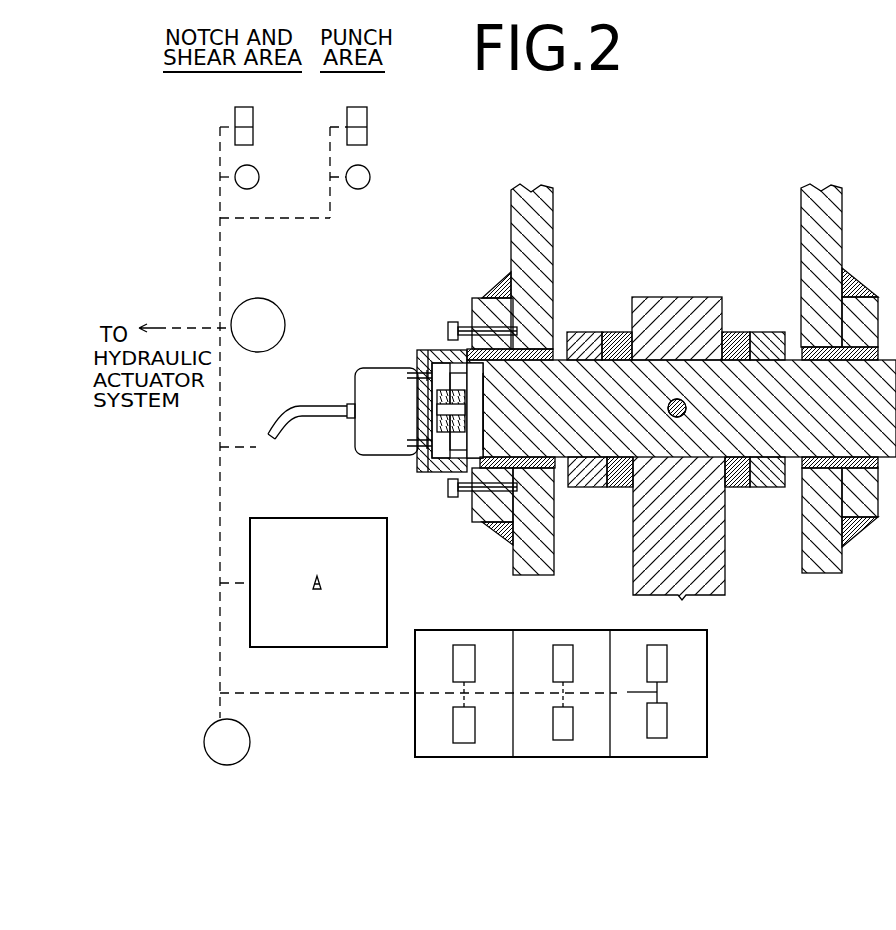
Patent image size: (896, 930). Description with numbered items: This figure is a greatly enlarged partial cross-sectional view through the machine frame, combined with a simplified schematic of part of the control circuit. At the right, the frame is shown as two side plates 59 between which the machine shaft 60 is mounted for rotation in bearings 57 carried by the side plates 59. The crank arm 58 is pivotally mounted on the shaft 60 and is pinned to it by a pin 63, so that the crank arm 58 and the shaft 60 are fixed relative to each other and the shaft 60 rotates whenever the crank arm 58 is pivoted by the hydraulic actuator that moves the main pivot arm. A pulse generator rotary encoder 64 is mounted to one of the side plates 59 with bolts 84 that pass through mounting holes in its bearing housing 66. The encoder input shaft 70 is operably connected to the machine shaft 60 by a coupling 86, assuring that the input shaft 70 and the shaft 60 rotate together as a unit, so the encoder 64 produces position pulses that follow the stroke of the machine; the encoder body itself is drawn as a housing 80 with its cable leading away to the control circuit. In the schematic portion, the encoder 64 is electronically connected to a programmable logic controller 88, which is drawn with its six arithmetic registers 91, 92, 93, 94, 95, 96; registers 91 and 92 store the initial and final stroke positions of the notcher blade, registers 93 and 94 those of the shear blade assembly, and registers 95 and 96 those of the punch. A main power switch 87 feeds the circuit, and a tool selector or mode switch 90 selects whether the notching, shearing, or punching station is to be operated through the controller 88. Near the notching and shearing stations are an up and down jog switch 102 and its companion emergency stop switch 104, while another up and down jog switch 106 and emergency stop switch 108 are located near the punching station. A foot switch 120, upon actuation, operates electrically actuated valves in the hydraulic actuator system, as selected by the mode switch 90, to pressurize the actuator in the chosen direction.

The bearings 57 is at (556, 349).
The crank arm 58 is at (683, 297).
The side plates 59 is at (553, 245).
The shaft 60 is at (796, 440).
The pin 63 is at (686, 405).
The pulse generator rotary encoder 64 is at (380, 338).
The bearing housing 66 is at (428, 350).
The encoder input shaft 70 is at (440, 408).
The sensor housing 80 is at (365, 368).
The bolts 84 is at (455, 322).
The coupling 86 is at (421, 475).
The main power switch 87 is at (276, 303).
The programmable logic controller 88 is at (601, 707).
The mode switch 90 is at (310, 518).
The arithmetic register 91 is at (453, 680).
The arithmetic register 92 is at (453, 725).
The arithmetic register 93 is at (553, 680).
The arithmetic register 94 is at (553, 722).
The arithmetic register 95 is at (647, 681).
The arithmetic register 96 is at (647, 725).
The up and down jog switch 102 is at (235, 106).
The emergency stop switch 104 is at (259, 177).
The up and down jog switch 106 is at (357, 106).
The emergency stop switch 108 is at (369, 183).
The foot switch 120 is at (239, 764).